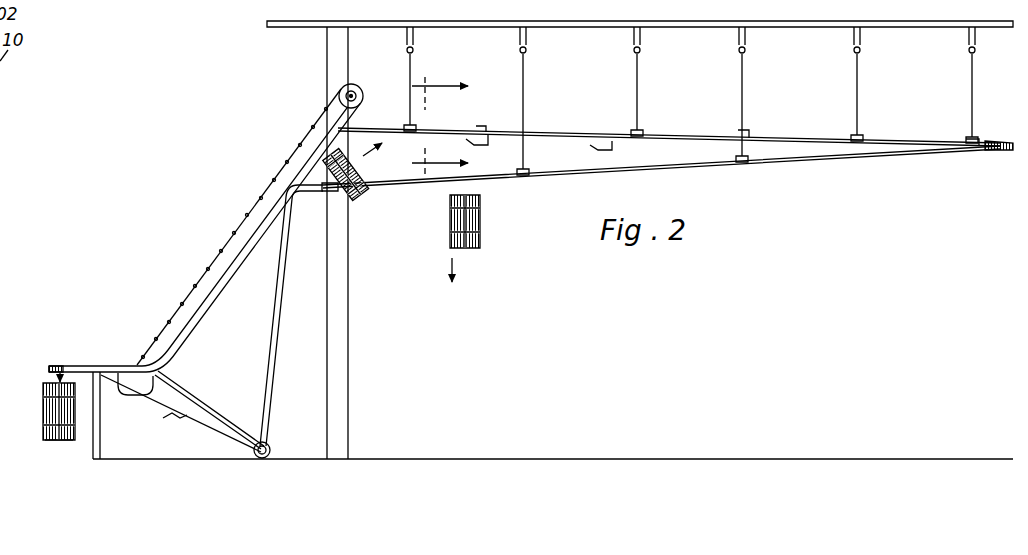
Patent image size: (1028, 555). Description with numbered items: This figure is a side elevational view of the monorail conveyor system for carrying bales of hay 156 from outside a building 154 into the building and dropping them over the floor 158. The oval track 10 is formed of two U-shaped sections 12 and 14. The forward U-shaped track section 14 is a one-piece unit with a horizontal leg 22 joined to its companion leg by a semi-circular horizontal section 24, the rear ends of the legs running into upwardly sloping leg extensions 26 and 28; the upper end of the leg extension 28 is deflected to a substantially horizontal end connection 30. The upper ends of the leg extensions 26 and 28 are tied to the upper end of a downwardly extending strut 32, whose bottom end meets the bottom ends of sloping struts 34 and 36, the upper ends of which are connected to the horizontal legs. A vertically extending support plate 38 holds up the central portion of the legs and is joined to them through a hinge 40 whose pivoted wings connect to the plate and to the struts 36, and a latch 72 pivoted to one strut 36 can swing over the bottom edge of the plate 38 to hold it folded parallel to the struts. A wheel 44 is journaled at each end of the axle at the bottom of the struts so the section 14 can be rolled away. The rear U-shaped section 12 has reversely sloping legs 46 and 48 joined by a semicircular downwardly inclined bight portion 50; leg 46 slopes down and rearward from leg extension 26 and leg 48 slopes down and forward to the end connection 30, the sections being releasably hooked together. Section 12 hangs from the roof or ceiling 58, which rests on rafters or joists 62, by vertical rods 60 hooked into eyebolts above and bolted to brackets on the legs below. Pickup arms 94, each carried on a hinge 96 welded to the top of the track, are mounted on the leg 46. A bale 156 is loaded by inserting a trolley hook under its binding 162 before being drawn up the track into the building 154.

The track 10 is at (866, 111).
The U-shaped section 12 is at (667, 129).
The forward U-shaped track section 14 is at (192, 253).
The horizontal leg 22 is at (90, 365).
The semi-circular horizontal section 24 is at (53, 369).
The leg extension 26 is at (306, 165).
The leg extension 28 is at (223, 280).
The end connection 30 is at (310, 192).
The strut 32 is at (278, 322).
The sloping strut 34 is at (215, 412).
The sloping strut 36 is at (158, 402).
The support plate 38 is at (102, 426).
The hinge 40 is at (107, 382).
The wheel 44 is at (268, 444).
The leg 46 is at (672, 132).
The leg 48 is at (626, 171).
The bight portion 50 is at (1010, 151).
The roof or ceiling 58 is at (910, 21).
The vertical rod 60 is at (743, 129).
The rafter or joist 62 is at (641, 42).
The latch 72 is at (176, 421).
The pickup arm 94 is at (468, 141).
The hinge 96 is at (482, 124).
The building 154 is at (325, 74).
The bale of hay 156 is at (50, 442).
The floor 158 is at (637, 459).
The binding 162 is at (67, 443).